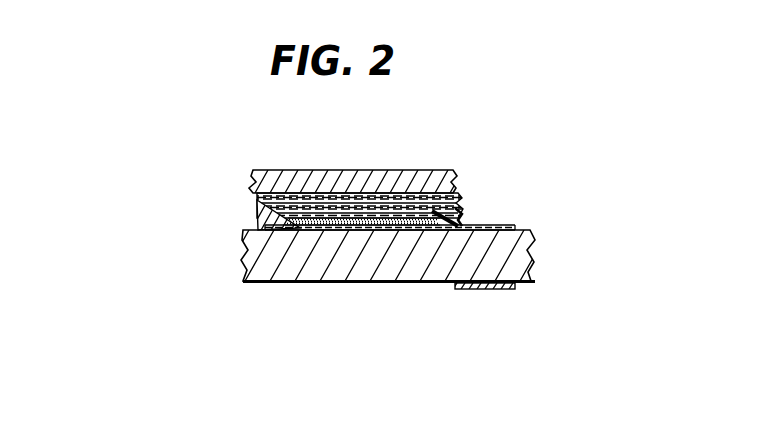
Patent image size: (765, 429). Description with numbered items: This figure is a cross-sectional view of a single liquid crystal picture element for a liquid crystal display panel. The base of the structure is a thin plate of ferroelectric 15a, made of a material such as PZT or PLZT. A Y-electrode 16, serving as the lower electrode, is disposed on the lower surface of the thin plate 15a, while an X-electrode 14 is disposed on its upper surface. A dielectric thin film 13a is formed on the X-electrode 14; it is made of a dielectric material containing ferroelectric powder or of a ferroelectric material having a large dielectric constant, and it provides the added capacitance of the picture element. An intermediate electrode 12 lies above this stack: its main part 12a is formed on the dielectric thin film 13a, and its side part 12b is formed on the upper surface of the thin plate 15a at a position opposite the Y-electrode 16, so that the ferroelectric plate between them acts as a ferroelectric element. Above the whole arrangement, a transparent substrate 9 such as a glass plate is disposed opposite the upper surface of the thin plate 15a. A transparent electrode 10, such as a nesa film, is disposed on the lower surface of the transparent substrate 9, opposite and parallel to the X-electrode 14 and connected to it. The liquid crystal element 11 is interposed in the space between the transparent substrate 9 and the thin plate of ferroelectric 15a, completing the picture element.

The transparent substrate 9 is at (373, 170).
The transparent electrode 10 is at (433, 190).
The liquid crystal element 11 is at (458, 208).
The intermediate electrode 12 is at (463, 209).
The main part of intermediate electrode 12a is at (324, 200).
The side part of intermediate electrode 12b is at (515, 226).
The dielectric thin film 13a is at (262, 209).
The X-electrode 14 is at (384, 232).
The thin plate of ferroelectric 15a is at (270, 283).
The Y-electrode 16 is at (483, 289).